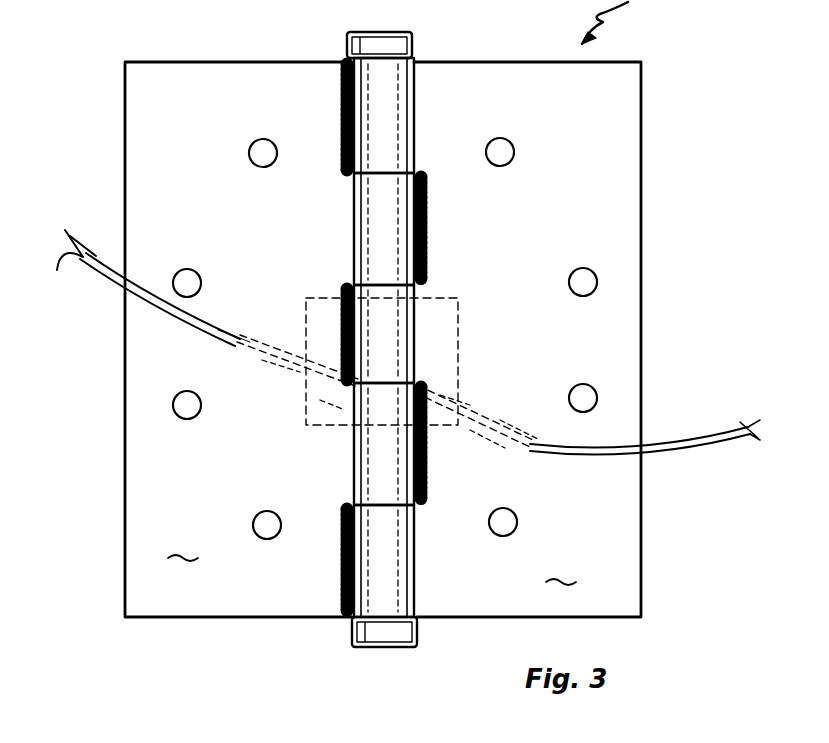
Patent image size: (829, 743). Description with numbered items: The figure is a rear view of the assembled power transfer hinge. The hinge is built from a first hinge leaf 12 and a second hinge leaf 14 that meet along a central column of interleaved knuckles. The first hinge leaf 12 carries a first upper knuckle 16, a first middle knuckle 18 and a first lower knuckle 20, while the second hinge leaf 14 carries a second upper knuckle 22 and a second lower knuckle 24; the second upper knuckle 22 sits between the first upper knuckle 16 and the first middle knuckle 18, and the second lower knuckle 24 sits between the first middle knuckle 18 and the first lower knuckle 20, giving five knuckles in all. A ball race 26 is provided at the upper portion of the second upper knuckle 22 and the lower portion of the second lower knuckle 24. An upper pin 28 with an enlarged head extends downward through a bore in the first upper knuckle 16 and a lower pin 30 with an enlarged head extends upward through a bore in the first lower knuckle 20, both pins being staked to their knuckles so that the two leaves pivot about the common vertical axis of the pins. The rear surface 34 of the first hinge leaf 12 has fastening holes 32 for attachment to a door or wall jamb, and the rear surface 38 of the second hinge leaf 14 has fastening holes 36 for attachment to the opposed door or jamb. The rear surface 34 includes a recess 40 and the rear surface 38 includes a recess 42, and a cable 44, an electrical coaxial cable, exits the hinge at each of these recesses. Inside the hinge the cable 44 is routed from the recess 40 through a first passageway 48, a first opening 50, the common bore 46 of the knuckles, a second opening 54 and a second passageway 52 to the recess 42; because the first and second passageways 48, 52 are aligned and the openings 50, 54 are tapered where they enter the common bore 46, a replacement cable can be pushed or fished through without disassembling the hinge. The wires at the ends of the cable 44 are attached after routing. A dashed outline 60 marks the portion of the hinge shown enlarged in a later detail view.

The first hinge leaf 12 is at (250, 60).
The second hinge leaf 14 is at (546, 62).
The first upper knuckle 16 is at (362, 108).
The first middle knuckle 18 is at (400, 358).
The first lower knuckle 20 is at (360, 576).
The second upper knuckle 22 is at (362, 230).
The second lower knuckle 24 is at (408, 447).
The ball race 26 is at (412, 186).
The upper pin 28 is at (415, 47).
The lower pin 30 is at (424, 562).
The fastening holes 32 is at (187, 268).
The rear surface 34 is at (183, 542).
The fastening holes 36 is at (580, 268).
The rear surface 38 is at (564, 566).
The recess 40 is at (222, 332).
The recess 42 is at (528, 436).
The cable 44 is at (215, 360).
The common bore 46 is at (346, 160).
The first passageway 48 is at (300, 388).
The first opening 50 is at (334, 425).
The second passageway 52 is at (473, 450).
The second opening 54 is at (465, 402).
The outline 60 is at (304, 300).